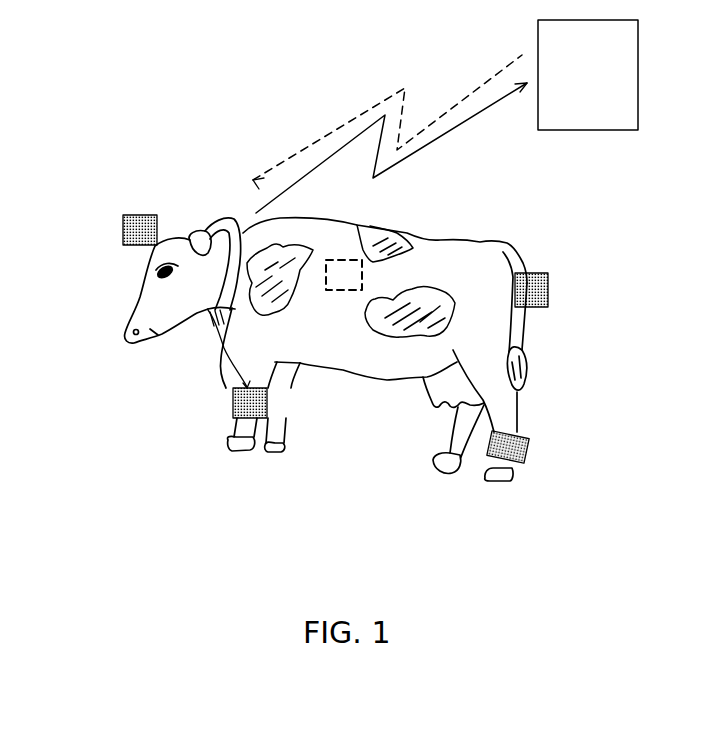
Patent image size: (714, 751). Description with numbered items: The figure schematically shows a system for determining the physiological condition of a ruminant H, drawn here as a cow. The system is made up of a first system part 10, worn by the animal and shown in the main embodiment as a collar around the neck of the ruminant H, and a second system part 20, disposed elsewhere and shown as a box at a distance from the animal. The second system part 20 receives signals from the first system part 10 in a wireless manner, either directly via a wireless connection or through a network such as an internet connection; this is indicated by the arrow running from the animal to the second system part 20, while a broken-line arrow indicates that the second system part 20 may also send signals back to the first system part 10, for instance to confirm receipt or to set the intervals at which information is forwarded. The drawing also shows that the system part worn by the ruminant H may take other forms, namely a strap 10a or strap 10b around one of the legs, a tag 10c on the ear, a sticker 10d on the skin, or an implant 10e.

The ruminant H is at (182, 430).
The first system part 10 is at (232, 308).
The strap 10a is at (268, 408).
The strap 10b is at (532, 453).
The tag 10c is at (146, 208).
The sticker 10d is at (535, 270).
The implant 10e is at (344, 250).
The second system part 20 is at (593, 90).